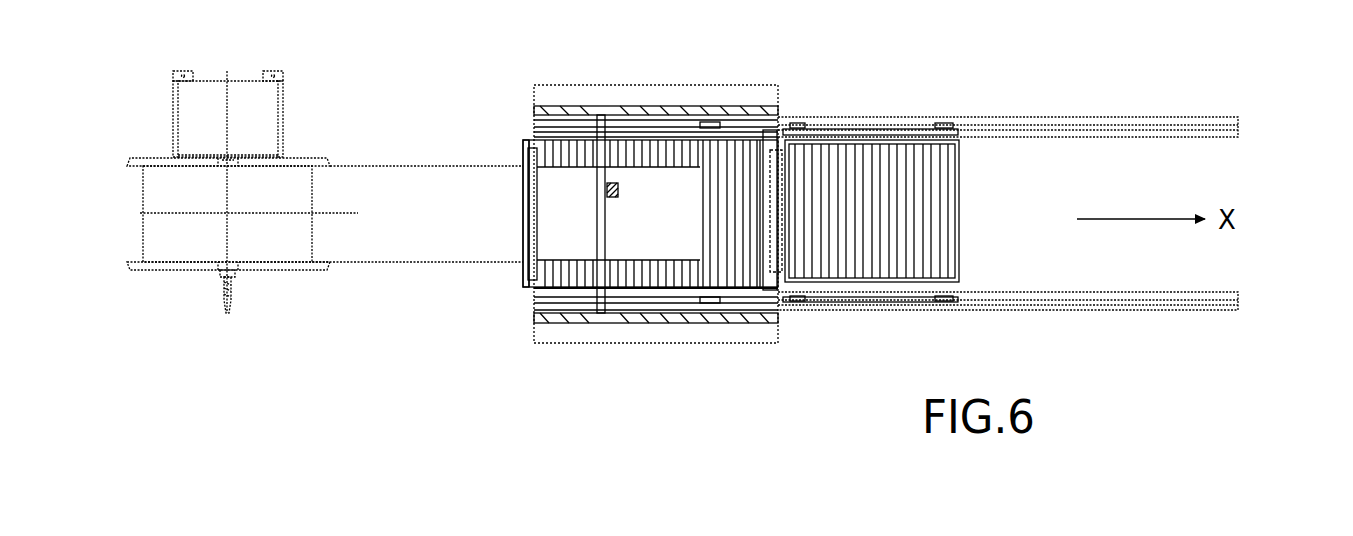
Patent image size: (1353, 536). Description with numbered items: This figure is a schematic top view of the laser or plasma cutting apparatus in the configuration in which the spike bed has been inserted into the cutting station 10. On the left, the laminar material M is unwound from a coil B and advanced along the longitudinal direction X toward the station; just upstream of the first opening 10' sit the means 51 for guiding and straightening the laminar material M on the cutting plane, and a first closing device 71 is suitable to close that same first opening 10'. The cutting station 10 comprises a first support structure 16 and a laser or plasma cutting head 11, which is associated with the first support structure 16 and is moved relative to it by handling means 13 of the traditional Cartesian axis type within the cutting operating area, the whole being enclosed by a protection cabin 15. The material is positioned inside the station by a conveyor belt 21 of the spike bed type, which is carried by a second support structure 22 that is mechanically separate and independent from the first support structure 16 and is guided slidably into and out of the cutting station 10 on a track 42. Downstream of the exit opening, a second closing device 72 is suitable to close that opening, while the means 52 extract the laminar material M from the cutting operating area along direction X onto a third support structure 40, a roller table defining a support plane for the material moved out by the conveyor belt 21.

The coil B is at (187, 285).
The laminar material M is at (383, 176).
The cutting station 10 is at (656, 270).
The first opening 10' is at (600, 180).
The laser or plasma cutting head 11 is at (613, 183).
The handling means 13 is at (603, 240).
The protection cabin 15 is at (722, 85).
The first support structure 16 is at (570, 106).
The conveyor belt 21 is at (729, 253).
The second support structure 22 is at (757, 288).
The third support structure 40 is at (923, 214).
The track 42 is at (1228, 117).
The means for guiding and straightening 51 is at (433, 253).
The first closing device 71 is at (522, 268).
The means for extracting 52 is at (853, 150).
The second closing device 72 is at (782, 175).